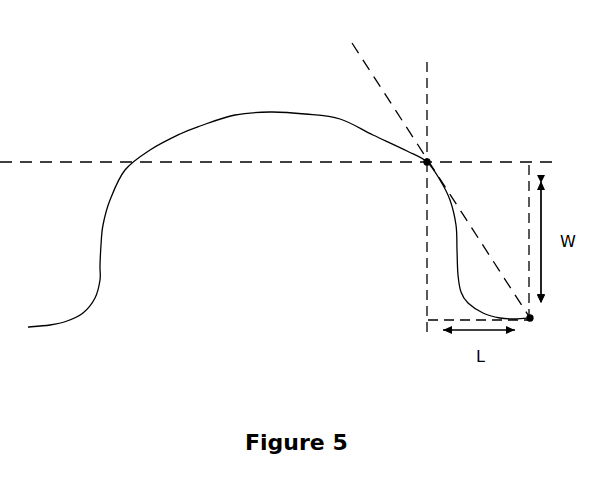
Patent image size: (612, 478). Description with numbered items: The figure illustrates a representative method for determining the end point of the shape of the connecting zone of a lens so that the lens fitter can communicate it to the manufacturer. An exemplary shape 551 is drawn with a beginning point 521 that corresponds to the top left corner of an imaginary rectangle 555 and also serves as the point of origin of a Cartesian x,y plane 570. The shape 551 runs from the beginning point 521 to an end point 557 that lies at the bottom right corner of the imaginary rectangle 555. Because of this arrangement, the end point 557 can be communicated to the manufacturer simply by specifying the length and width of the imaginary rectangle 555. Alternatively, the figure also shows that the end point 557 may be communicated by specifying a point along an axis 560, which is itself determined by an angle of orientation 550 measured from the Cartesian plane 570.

The beginning point 521 is at (433, 153).
The angle of orientation 550 is at (480, 160).
The shape 551 is at (455, 274).
The imaginary rectangle 555 is at (420, 242).
The end point 557 is at (532, 321).
The axis 560 is at (363, 58).
The Cartesian x,y plane 570 is at (428, 102).